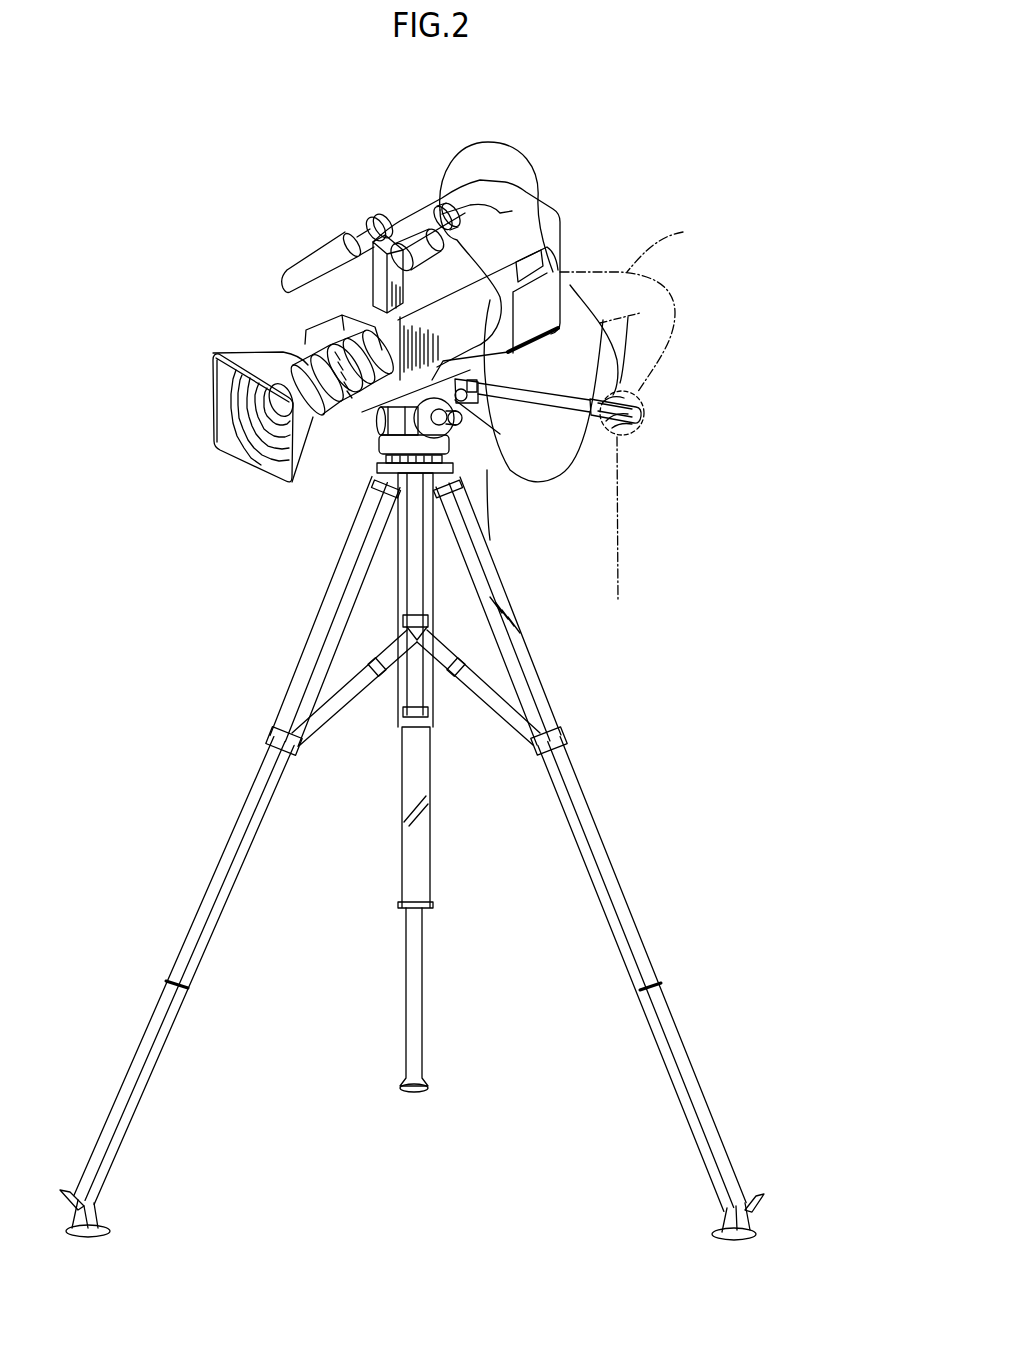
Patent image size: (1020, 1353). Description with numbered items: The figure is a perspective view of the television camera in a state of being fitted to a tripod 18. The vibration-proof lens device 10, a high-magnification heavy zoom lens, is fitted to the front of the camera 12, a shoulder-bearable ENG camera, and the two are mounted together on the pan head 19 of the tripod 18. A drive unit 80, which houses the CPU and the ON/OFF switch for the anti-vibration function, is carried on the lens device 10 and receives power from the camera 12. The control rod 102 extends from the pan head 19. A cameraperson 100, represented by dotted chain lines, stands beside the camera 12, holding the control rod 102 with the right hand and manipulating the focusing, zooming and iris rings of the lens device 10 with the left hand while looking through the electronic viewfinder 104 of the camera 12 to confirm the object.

The vibration-proof lens device 10 is at (281, 334).
The camera 12 is at (566, 196).
The tripod 18 is at (597, 725).
The pan head 19 is at (417, 432).
The drive unit 80 is at (319, 300).
The cameraperson 100 is at (587, 371).
The control rod 102 is at (640, 415).
The electronic viewfinder 104 is at (423, 232).